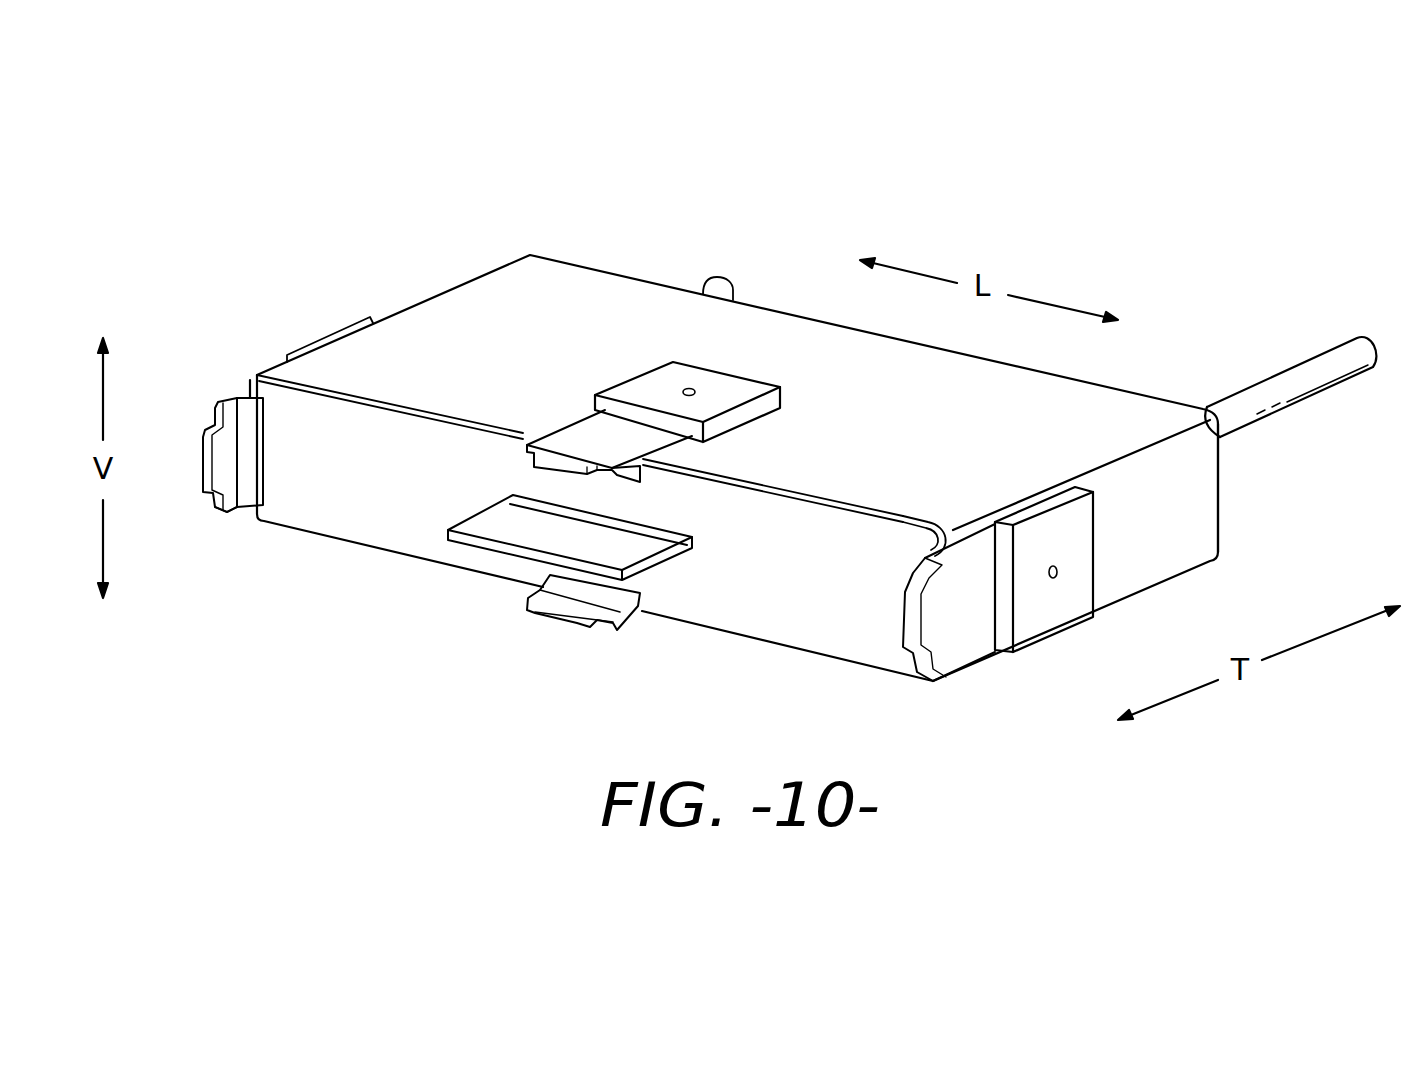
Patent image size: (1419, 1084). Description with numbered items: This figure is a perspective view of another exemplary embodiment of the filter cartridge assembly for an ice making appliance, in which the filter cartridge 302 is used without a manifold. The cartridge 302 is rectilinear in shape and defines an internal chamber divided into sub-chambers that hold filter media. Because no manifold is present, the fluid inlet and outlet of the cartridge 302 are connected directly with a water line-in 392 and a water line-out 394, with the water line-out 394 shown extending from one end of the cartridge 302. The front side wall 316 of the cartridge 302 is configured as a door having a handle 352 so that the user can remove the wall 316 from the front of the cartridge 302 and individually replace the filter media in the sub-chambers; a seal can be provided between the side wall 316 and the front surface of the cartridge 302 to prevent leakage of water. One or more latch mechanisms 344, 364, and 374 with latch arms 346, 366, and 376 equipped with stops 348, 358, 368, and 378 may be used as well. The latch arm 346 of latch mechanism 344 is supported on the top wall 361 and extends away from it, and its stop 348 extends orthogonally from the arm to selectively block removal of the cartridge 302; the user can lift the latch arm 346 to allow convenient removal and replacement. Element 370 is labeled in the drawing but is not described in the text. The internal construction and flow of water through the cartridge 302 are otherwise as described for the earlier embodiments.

The filter cartridge 302 is at (621, 222).
The side wall 316 is at (392, 520).
The latch mechanism 344 is at (628, 352).
The latch arm 346 is at (582, 440).
The stop 348 is at (720, 481).
The handle 352 is at (540, 537).
The stop 358 is at (722, 383).
The top wall 361 is at (494, 292).
The latch mechanism 364 is at (1125, 561).
The latch arm 366 is at (947, 640).
The stop 368 is at (912, 550).
The clip plate 370 is at (1046, 612).
The latch mechanism 374 is at (300, 318).
The latch arm 376 is at (237, 395).
The stop 378 is at (215, 503).
The water line-in 392 is at (705, 283).
The water line-out 394 is at (1322, 362).